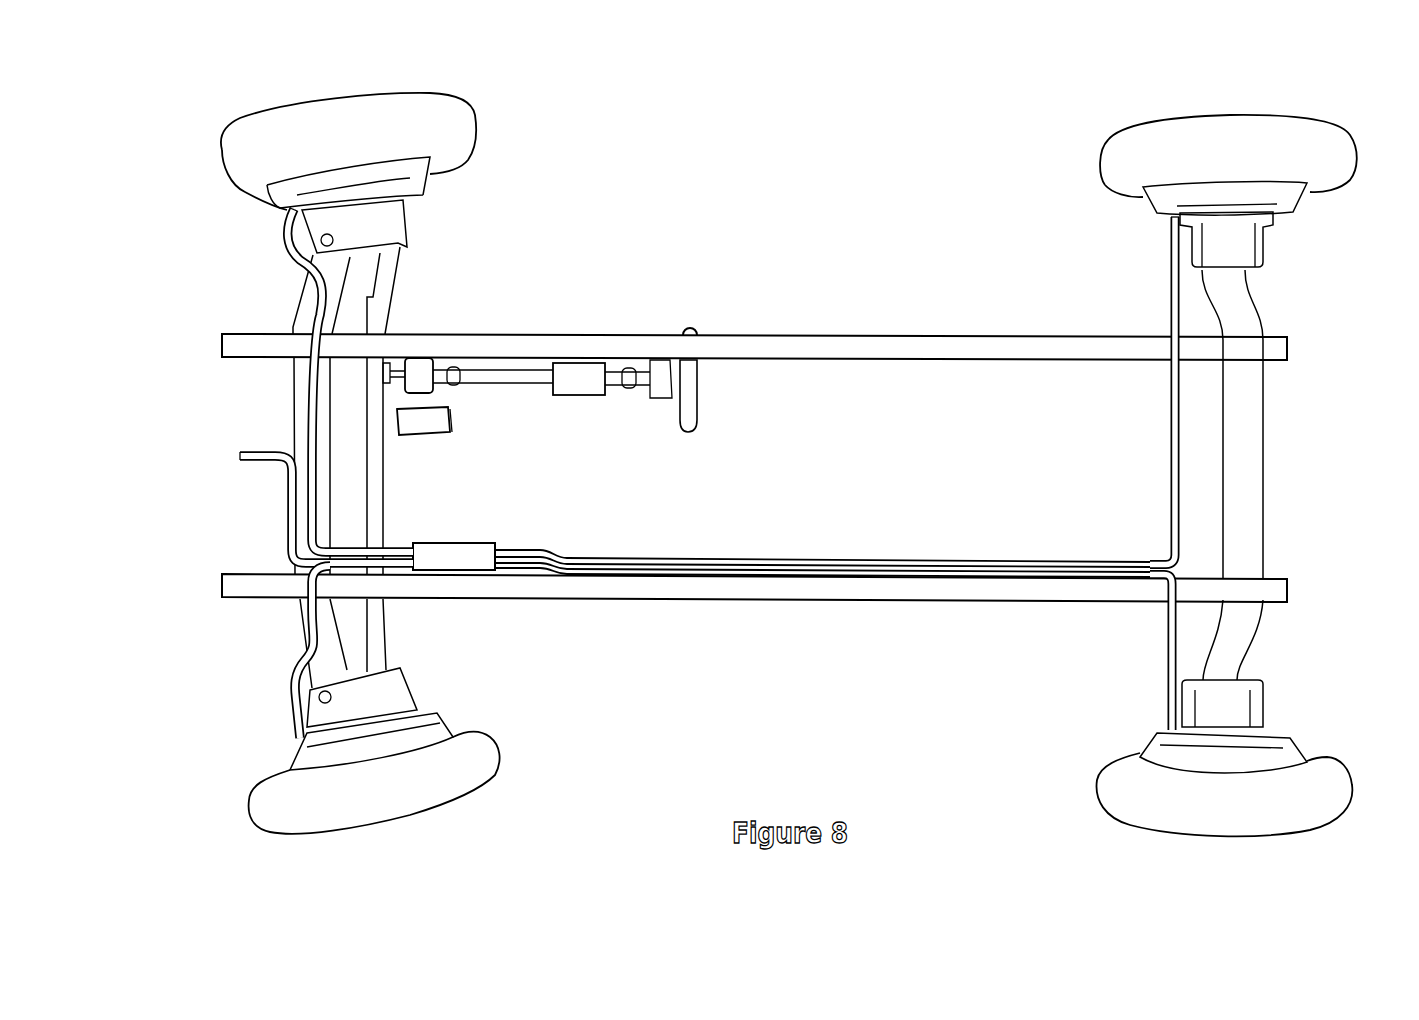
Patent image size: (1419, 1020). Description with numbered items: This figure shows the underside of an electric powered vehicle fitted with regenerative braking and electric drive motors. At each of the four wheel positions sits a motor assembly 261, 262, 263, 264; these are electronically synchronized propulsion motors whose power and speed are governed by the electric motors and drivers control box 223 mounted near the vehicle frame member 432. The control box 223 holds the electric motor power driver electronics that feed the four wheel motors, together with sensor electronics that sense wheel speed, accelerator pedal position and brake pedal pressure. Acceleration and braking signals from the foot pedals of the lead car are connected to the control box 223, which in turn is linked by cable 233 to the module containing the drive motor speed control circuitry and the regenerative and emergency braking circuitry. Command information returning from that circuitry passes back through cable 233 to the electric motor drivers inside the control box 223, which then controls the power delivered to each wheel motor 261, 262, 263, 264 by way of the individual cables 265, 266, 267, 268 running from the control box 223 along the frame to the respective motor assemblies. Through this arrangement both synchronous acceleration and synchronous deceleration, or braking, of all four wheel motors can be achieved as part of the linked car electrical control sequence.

The electric motors and drivers control box 223 is at (490, 543).
The cable 233 is at (290, 527).
The vehicle frame member 432 is at (222, 582).
The motor assembly 261 is at (415, 170).
The motor assembly 262 is at (432, 723).
The motor assembly 263 is at (1293, 197).
The motor assembly 264 is at (1290, 757).
The cable 265 is at (307, 317).
The cable 266 is at (290, 690).
The cable 267 is at (1170, 293).
The cable 268 is at (1167, 698).